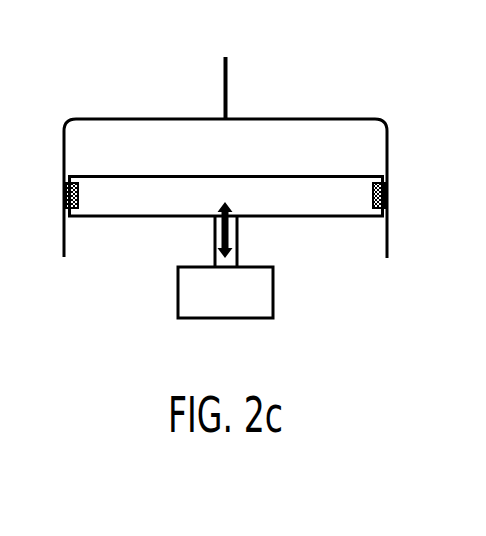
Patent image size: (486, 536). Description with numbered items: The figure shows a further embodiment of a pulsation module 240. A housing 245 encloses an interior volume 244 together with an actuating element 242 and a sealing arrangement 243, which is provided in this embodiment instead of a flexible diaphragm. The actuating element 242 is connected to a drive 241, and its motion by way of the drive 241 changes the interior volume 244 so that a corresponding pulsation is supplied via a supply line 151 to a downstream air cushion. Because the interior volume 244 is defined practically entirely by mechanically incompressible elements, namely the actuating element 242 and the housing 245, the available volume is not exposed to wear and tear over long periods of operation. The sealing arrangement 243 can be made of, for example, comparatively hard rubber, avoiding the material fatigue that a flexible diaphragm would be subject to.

The pulsation module 240 is at (120, 288).
The drive 241 is at (275, 295).
The actuating element 242 is at (317, 218).
The sealing arrangement 243 is at (385, 195).
The interior volume 244 is at (370, 150).
The housing 245 is at (104, 118).
The supply line 151 is at (228, 77).